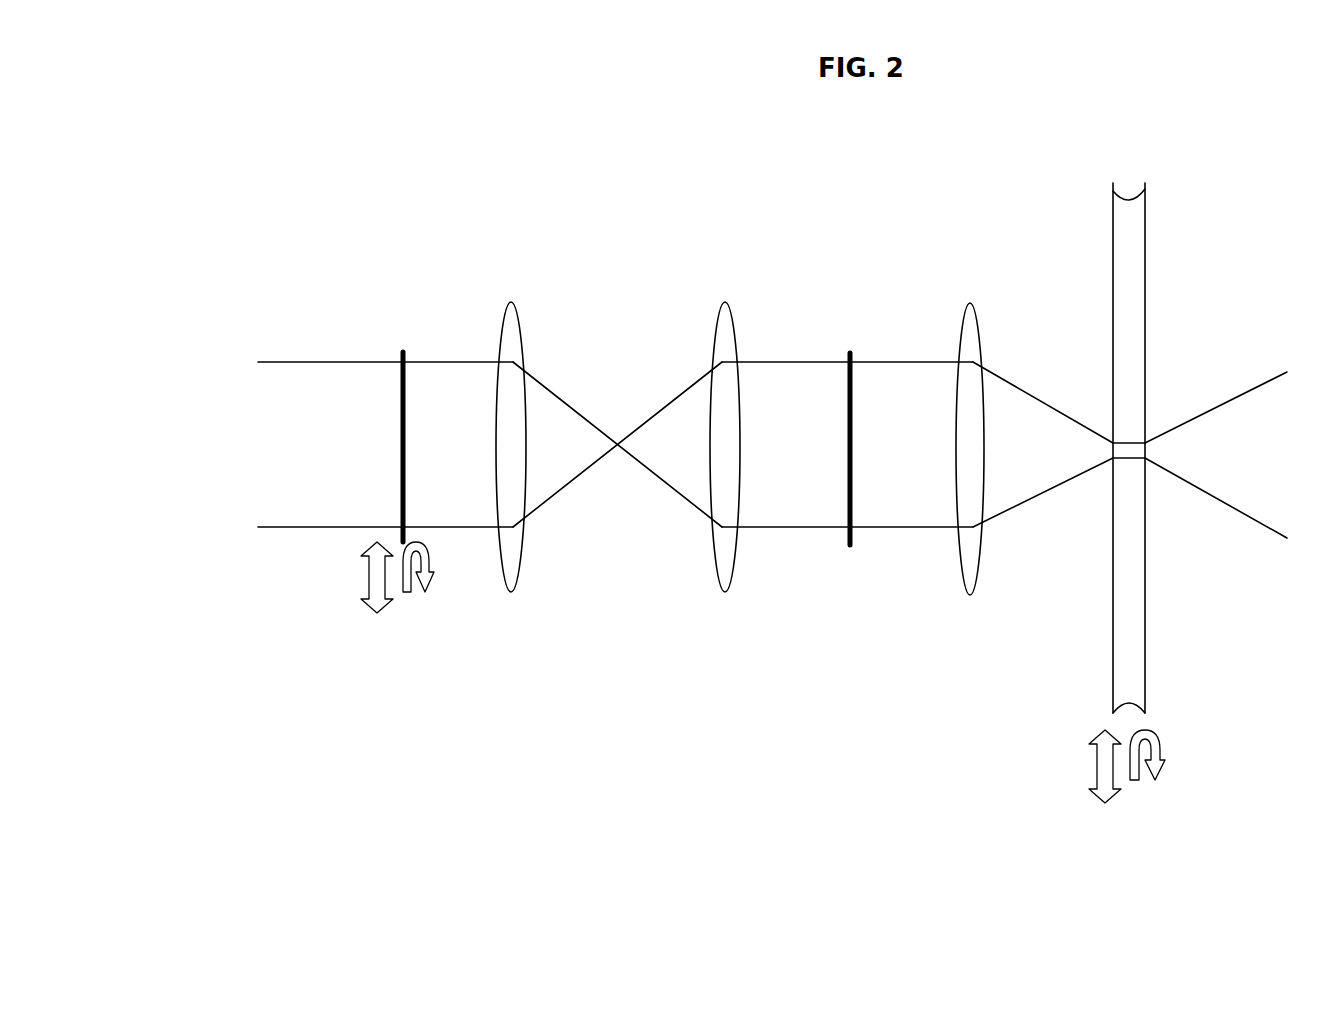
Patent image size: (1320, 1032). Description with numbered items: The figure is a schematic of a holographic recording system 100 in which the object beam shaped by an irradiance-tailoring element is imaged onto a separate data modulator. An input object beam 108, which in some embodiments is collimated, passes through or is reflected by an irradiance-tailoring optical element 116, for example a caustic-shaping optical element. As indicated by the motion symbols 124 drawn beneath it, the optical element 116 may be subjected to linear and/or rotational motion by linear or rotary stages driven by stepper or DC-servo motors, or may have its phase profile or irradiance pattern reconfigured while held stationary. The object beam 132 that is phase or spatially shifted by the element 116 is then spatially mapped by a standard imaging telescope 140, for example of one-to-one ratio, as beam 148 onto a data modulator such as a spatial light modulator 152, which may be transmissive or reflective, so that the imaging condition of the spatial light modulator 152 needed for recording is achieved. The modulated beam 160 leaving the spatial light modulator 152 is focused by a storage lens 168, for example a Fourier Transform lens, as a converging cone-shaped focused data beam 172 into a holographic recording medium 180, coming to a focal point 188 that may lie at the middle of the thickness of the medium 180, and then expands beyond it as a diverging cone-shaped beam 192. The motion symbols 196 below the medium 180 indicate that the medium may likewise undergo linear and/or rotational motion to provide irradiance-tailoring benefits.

The holographic recording system 100 is at (281, 160).
The input object beam 108 is at (306, 342).
The irradiance-tailoring optical element 116 is at (403, 352).
The motion symbols 124 is at (373, 635).
The object beam 132 is at (475, 568).
The imaging telescope 140 is at (633, 336).
The beam 148 is at (802, 320).
The spatial light modulator 152 is at (850, 545).
The modulated beam 160 is at (921, 325).
The storage lens 168 is at (970, 595).
The converging cone-shaped focused data beam 172 is at (1030, 544).
The holographic recording medium 180 is at (1130, 305).
The focal point 188 is at (1137, 463).
The diverging cone-shaped beam 192 is at (1252, 359).
The motion symbols 196 is at (1122, 830).